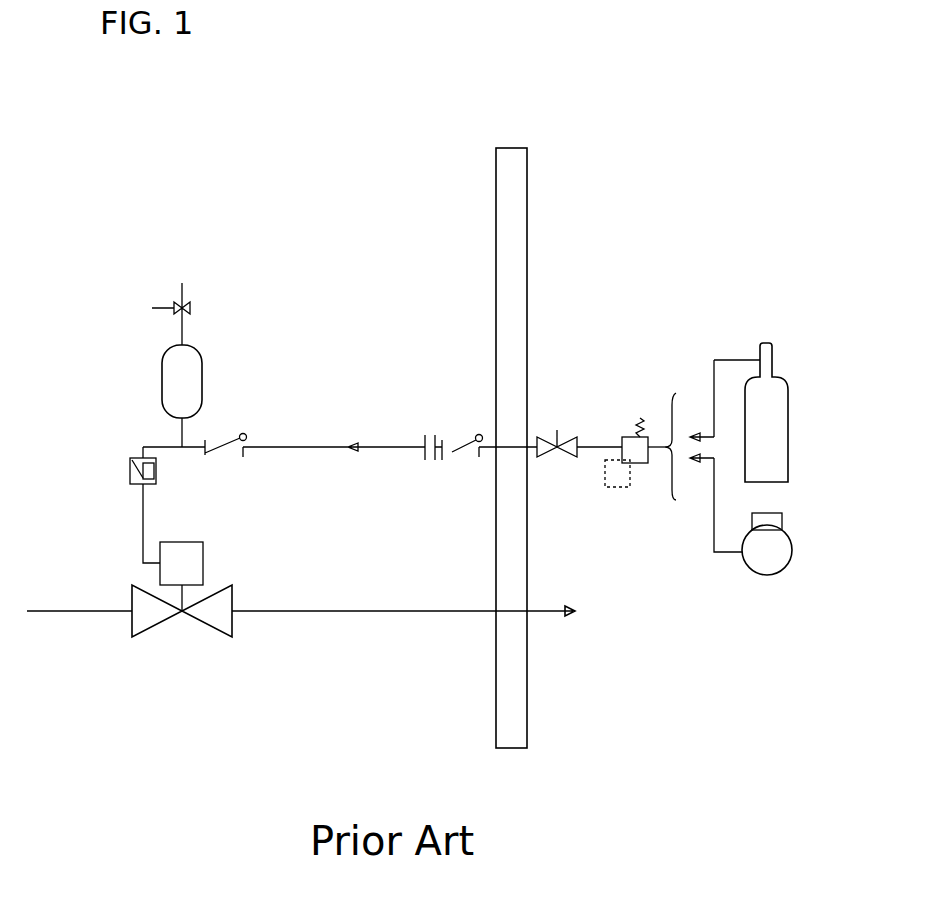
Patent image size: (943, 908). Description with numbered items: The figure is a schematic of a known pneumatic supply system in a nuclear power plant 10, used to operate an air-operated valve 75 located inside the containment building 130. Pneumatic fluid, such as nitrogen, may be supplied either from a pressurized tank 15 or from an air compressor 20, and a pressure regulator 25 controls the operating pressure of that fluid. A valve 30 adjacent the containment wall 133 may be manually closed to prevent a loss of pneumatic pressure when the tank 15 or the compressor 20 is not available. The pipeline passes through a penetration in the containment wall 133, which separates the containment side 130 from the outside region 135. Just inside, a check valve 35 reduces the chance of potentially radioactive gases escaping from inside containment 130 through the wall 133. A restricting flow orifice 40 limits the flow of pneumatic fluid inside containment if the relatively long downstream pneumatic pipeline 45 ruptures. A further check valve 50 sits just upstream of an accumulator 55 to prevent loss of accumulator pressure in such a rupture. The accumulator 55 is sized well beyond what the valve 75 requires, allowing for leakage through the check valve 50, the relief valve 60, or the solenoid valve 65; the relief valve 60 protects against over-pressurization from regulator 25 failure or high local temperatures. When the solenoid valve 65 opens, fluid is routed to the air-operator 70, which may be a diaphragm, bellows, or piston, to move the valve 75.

The nuclear power plant 10 is at (182, 121).
The pressurized tank 15 is at (785, 384).
The air compressor 20 is at (788, 538).
The pressure regulator 25 is at (641, 463).
The valve 30 is at (559, 458).
The check valve 35 is at (453, 455).
The restricting flow orifice 40 is at (424, 457).
The downstream pneumatic pipeline 45 is at (314, 449).
The check valve 50 is at (218, 455).
The accumulator 55 is at (160, 373).
The relief valve 60 is at (192, 308).
The solenoid valve 65 is at (156, 470).
The air-operator 70 is at (203, 552).
The air-operated valve 75 is at (208, 625).
The containment building 130 is at (283, 224).
The containment wall 133 is at (527, 558).
The second area 135 is at (620, 224).